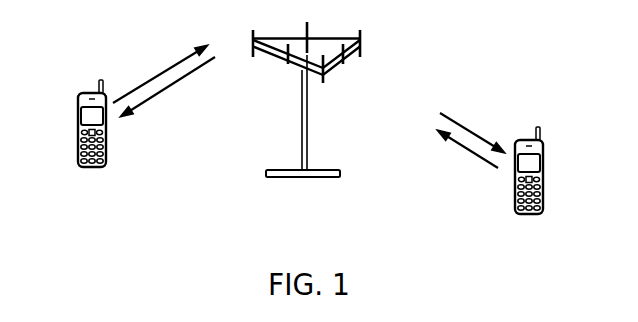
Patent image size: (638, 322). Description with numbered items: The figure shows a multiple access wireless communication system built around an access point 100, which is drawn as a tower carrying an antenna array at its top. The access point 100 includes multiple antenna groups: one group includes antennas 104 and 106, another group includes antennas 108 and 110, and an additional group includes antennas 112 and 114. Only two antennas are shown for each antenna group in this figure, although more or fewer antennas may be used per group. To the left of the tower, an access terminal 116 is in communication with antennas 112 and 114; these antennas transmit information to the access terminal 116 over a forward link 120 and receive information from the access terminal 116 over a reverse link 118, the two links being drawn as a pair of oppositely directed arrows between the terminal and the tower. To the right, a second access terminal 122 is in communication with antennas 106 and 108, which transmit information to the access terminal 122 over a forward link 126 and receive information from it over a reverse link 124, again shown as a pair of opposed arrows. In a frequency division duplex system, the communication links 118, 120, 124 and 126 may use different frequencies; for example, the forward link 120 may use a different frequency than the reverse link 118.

The access point 100 is at (308, 178).
The antenna 104 is at (324, 82).
The antenna 106 is at (344, 63).
The antenna 108 is at (361, 47).
The antenna 110 is at (307, 26).
The antenna 112 is at (252, 30).
The antenna 114 is at (288, 64).
The access terminal 116 is at (78, 110).
The reverse link 118 is at (167, 65).
The forward link 120 is at (153, 100).
The access terminal 122 is at (543, 164).
The reverse link 124 is at (475, 155).
The forward link 126 is at (470, 130).